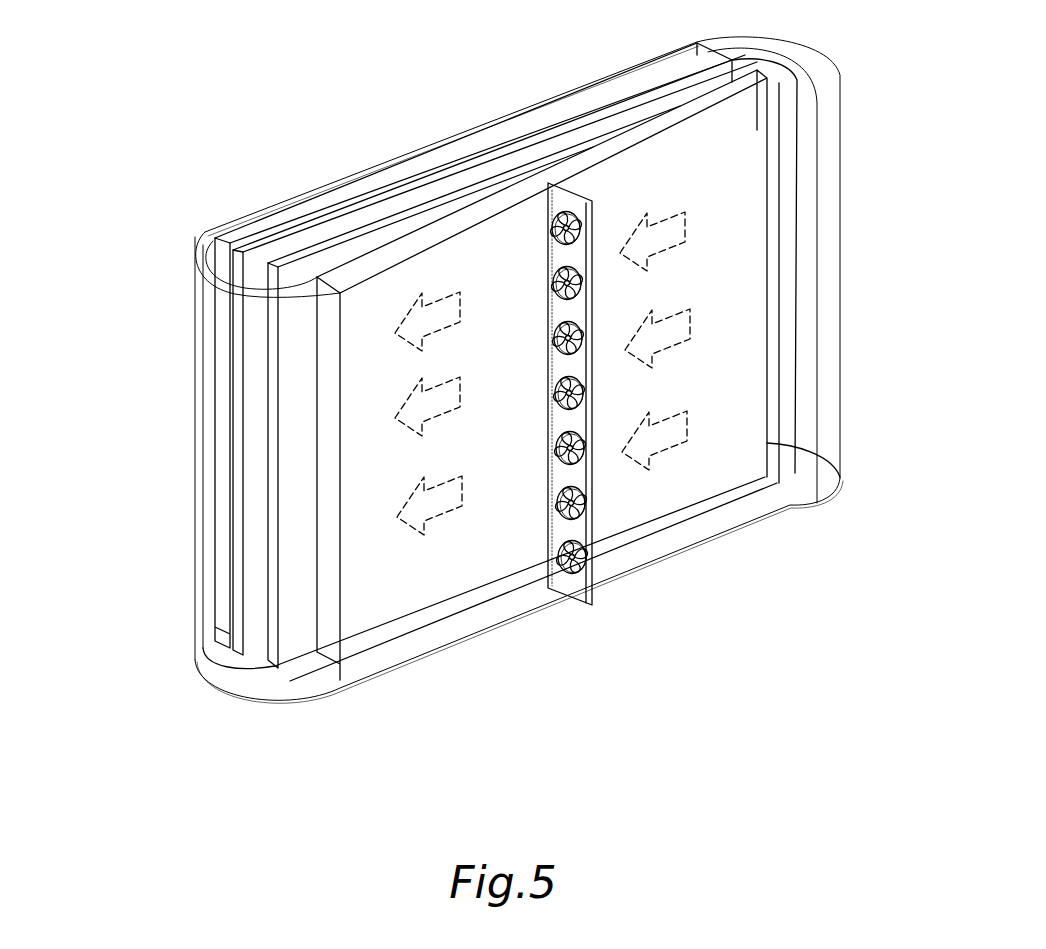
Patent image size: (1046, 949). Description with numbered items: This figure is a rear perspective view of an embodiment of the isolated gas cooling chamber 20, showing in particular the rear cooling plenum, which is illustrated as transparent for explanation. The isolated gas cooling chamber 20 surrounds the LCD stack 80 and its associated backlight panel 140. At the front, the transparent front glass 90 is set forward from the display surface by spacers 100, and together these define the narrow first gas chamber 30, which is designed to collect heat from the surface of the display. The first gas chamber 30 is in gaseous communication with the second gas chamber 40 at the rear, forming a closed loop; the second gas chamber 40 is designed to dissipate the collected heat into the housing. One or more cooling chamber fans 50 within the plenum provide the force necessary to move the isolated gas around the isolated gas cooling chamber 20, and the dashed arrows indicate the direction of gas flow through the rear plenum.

The isolated gas cooling chamber 20 is at (205, 731).
The first gas chamber 30 is at (220, 371).
The second gas chamber 40 is at (513, 614).
The cooling chamber fan 50 is at (566, 453).
The LCD stack 80 is at (545, 120).
The front glass 90 is at (308, 192).
The spacers 100 is at (226, 249).
The backlight panel 140 is at (652, 112).